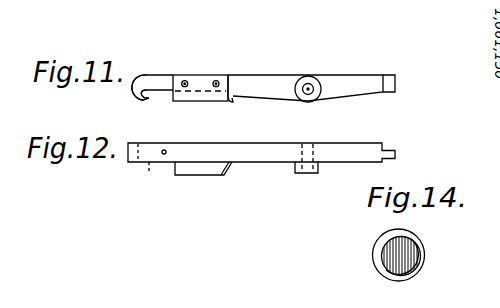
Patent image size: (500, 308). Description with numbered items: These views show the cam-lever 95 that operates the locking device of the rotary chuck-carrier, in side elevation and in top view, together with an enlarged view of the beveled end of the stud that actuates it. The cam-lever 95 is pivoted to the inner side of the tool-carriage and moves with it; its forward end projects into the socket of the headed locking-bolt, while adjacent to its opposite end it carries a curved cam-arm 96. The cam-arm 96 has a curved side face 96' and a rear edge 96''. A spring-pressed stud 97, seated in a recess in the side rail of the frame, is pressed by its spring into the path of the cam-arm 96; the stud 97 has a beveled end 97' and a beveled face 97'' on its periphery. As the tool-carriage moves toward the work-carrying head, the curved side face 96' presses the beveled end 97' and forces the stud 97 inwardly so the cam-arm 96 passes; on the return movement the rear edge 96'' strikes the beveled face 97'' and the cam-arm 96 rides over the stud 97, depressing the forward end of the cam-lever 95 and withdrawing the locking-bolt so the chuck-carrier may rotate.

In FIG. 11, the cam-lever 95 is at (263, 76).
In FIG. 12, the cam-lever 95 is at (278, 163).
In FIG. 11, the curved cam-arm 96 is at (203, 101).
In FIG. 12, the curved cam-arm 96 is at (203, 183).
In FIG. 11, the curved side face of the cam-arm 96' is at (157, 102).
In FIG. 11, the rear edge of the cam-arm 96'' is at (147, 100).
In FIG. 12, the rear edge of the cam-arm 96'' is at (154, 180).
In FIG. 14, the spring-pressed stud 97 is at (379, 255).
In FIG. 14, the beveled end of the stud 97' is at (416, 267).
In FIG. 14, the beveled face on the periphery of the stud 97'' is at (426, 258).